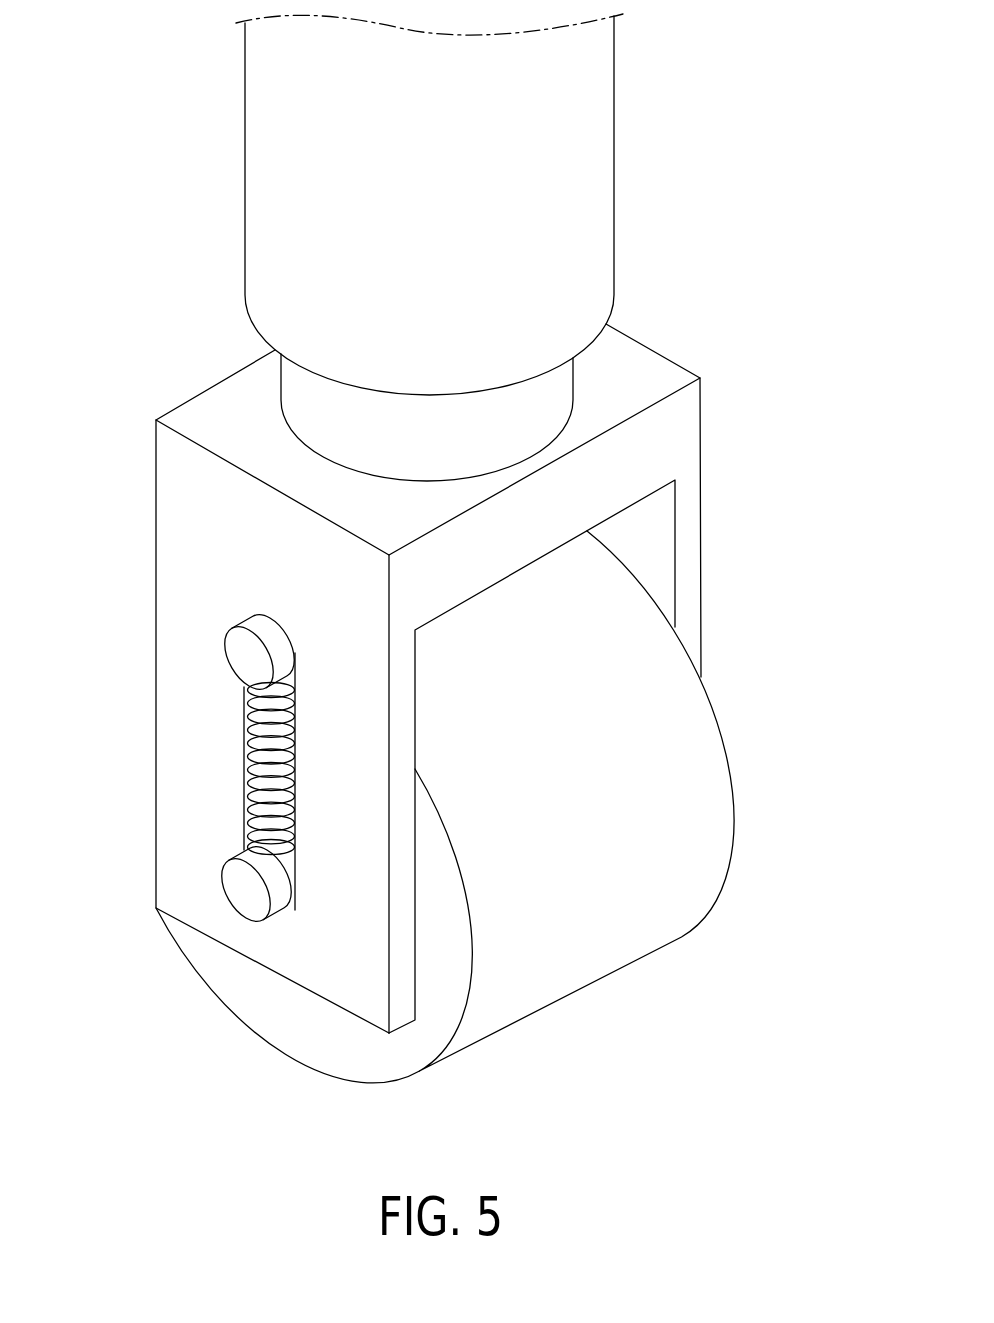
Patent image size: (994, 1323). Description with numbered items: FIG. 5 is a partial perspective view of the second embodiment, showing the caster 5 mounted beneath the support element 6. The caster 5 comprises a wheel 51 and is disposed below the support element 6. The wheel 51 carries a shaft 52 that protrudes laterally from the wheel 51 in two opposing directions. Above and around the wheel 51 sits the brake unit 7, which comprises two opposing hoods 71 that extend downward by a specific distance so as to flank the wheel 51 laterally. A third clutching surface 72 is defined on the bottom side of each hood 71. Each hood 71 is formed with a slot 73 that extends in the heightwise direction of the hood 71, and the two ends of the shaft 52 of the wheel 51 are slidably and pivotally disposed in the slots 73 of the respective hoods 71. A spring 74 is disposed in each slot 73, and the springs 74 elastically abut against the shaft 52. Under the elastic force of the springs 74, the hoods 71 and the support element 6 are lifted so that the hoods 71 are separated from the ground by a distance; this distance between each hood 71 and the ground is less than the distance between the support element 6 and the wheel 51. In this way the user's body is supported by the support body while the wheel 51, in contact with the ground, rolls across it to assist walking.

The caster 5 is at (479, 812).
The wheel 51 is at (702, 750).
The shaft 52 is at (232, 887).
The support element 6 is at (606, 216).
The brake unit 7 is at (130, 601).
The hood 71 is at (157, 697).
The third clutching surface 72 is at (395, 1036).
The slot 73 is at (232, 802).
The spring 74 is at (250, 753).